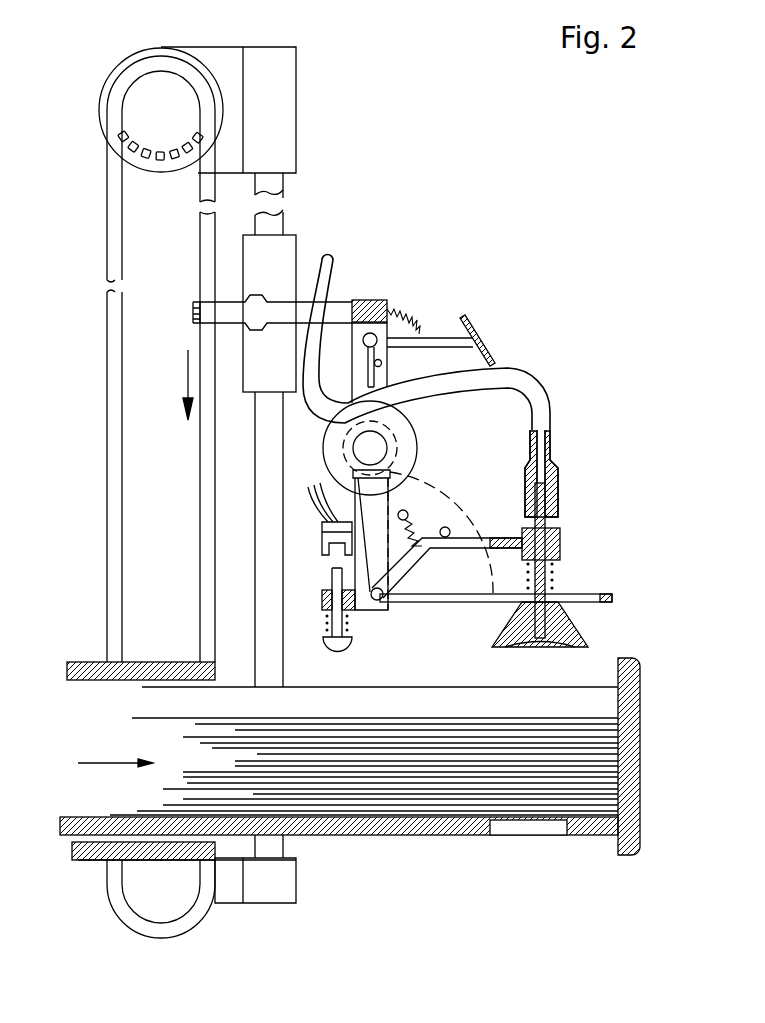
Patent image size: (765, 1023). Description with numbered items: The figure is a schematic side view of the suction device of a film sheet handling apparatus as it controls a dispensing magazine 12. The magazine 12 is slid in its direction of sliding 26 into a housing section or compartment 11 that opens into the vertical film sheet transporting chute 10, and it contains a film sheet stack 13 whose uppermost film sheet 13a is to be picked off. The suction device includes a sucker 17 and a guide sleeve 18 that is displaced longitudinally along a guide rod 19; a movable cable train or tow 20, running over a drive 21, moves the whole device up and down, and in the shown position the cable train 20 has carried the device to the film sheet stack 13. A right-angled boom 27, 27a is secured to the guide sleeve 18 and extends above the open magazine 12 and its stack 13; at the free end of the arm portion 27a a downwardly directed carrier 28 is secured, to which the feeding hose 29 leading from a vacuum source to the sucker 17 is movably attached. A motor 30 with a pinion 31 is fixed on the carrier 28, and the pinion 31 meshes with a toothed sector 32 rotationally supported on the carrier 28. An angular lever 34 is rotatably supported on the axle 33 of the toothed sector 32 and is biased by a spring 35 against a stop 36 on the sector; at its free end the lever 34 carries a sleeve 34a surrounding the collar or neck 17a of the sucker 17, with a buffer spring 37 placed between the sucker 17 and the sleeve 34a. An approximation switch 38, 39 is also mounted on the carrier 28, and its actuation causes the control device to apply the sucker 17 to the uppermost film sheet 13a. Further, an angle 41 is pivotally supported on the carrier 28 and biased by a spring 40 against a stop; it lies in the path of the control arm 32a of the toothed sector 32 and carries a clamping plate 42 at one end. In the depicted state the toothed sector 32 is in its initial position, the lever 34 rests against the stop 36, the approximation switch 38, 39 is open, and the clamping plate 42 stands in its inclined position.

The film sheet transporting chute 10 is at (388, 287).
The housing section 11 is at (130, 685).
The dispensing magazine 12 is at (633, 788).
The film sheet stack 13 is at (567, 755).
The uppermost film sheet 13a is at (433, 718).
The sucker 17 is at (570, 627).
The collar 17a is at (567, 518).
The guide sleeve 18 is at (283, 265).
The guide rod 19 is at (273, 218).
The cable train 20 is at (112, 257).
The drive 21 is at (177, 902).
The direction of sliding 26 is at (107, 746).
The boom 27 is at (343, 300).
The arm portion 27a is at (388, 292).
The carrier 28 is at (358, 368).
The feeding hose 29 is at (517, 377).
The motor 30 is at (410, 462).
The pinion 31 is at (392, 430).
The toothed sector 32 is at (452, 503).
The control arm 32a is at (612, 600).
The axle 33 is at (380, 610).
The angular lever 34 is at (465, 545).
The sleeve 34a is at (562, 543).
The spring 35 is at (410, 531).
The stop 36 is at (448, 530).
The buffer spring 37 is at (555, 577).
The approximation switch 38 is at (322, 595).
The approximation switch 39 is at (320, 535).
The spring 40 is at (412, 320).
The angle 41 is at (397, 378).
The clamping plate 42 is at (478, 322).